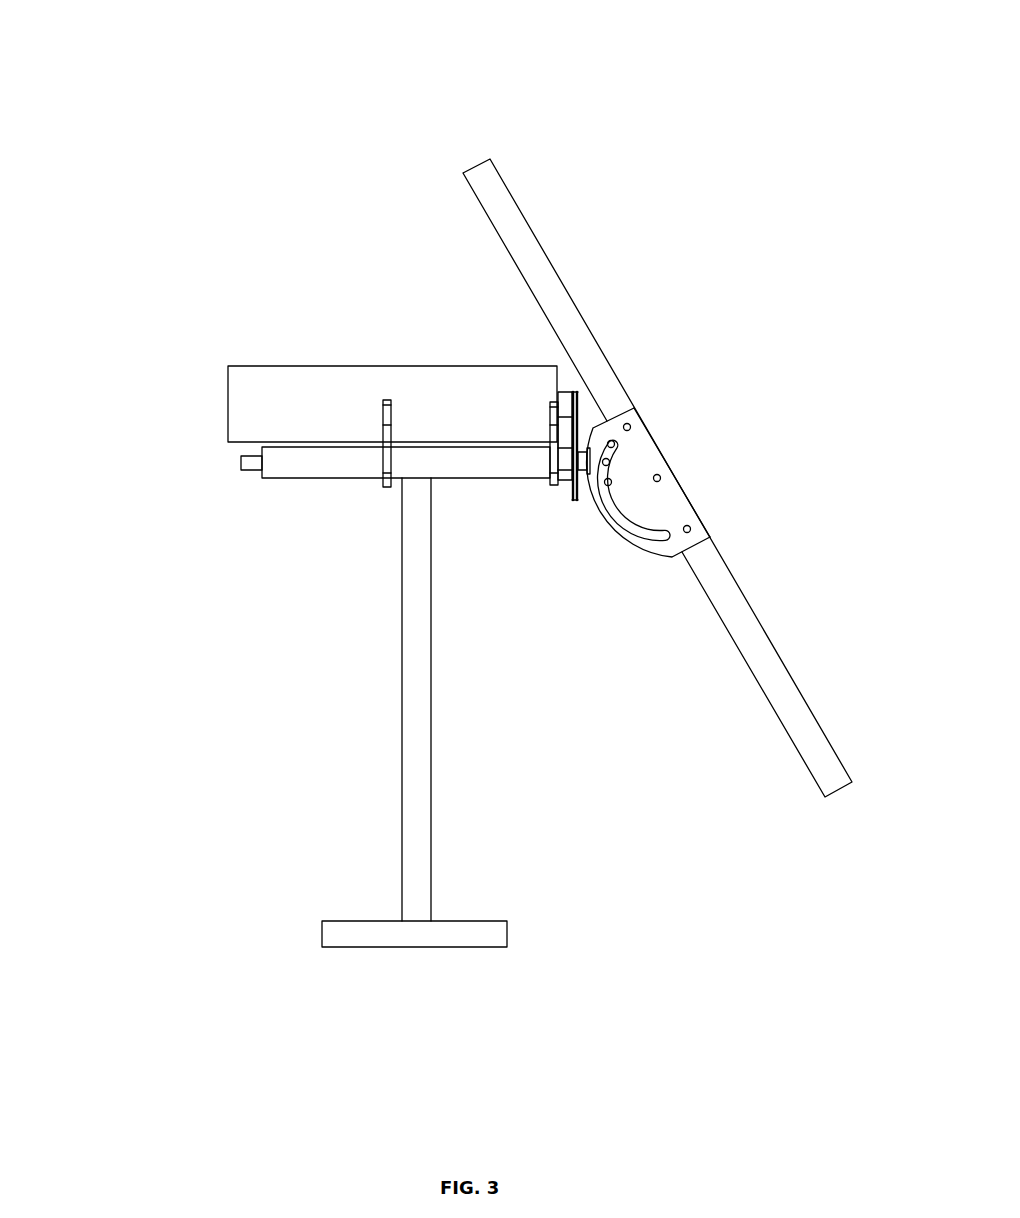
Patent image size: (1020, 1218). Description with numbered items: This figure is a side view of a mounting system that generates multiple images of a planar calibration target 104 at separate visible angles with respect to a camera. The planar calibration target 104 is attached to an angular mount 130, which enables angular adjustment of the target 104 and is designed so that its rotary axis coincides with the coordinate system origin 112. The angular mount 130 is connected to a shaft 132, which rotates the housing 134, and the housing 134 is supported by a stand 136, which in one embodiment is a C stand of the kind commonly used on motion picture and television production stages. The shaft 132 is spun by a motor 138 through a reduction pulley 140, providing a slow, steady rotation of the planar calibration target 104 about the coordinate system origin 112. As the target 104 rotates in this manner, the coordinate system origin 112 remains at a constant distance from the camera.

The planar calibration target 104 is at (517, 207).
The coordinate system origin 112 is at (667, 462).
The angular mount 130 is at (652, 556).
The shaft 132 is at (240, 462).
The housing 134 is at (358, 480).
The stand 136 is at (402, 811).
The motor 138 is at (465, 366).
The reduction pulley 140 is at (568, 485).